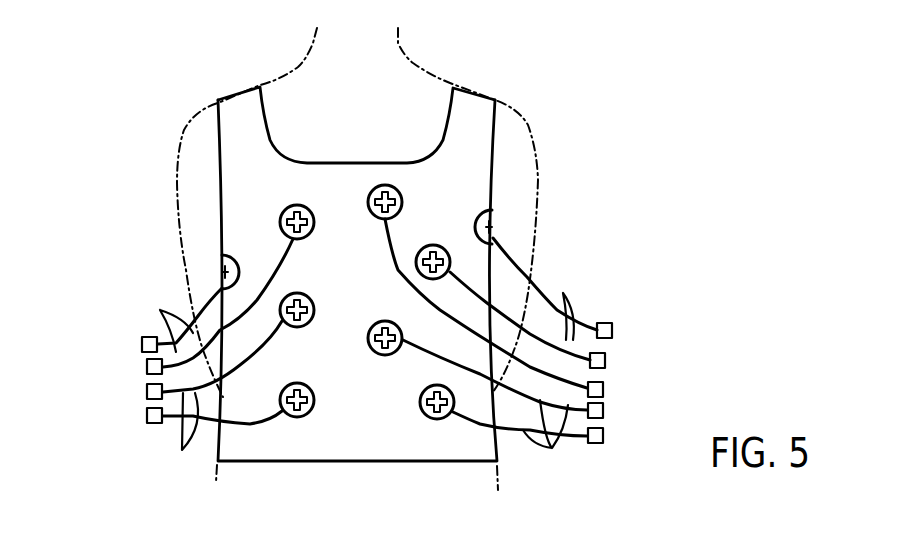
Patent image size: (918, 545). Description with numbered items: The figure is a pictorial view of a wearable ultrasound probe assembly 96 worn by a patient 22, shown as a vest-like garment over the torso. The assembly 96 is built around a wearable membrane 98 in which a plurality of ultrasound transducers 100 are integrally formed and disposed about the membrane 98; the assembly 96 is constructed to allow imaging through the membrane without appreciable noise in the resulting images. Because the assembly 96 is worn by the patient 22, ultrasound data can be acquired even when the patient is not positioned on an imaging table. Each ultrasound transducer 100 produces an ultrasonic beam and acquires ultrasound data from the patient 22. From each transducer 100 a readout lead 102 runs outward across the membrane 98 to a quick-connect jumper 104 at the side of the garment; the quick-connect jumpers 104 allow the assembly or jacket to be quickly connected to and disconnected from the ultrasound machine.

The patient 22 is at (303, 88).
The wearable ultrasound probe assembly 96 is at (377, 478).
The wearable membrane 98 is at (480, 143).
The ultrasound transducers 100 is at (385, 185).
The readout lead 102 is at (587, 292).
The quick-connect jumper 104 is at (147, 416).